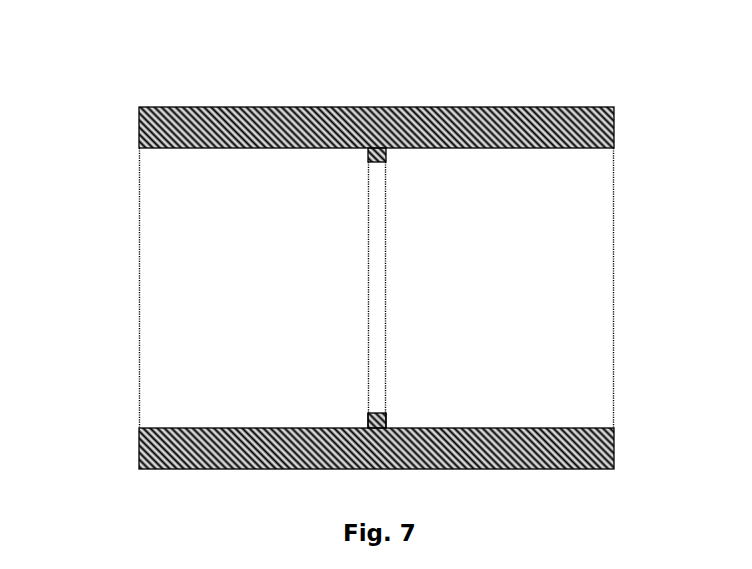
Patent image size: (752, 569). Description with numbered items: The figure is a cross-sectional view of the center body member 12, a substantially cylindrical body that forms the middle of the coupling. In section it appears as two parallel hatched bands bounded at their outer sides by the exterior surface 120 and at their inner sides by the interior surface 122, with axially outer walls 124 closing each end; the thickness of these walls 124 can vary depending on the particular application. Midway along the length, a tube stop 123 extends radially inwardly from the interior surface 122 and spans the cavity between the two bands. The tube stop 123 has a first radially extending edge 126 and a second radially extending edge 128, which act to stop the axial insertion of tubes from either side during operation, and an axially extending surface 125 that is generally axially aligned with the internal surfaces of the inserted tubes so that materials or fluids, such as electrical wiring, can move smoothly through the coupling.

The center body member 12 is at (85, 57).
The exterior surface 120 is at (226, 98).
The interior surface 122 is at (481, 420).
The tube stop 123 is at (407, 181).
The axially outer walls 124 is at (128, 138).
The axially extending surface 125 is at (368, 400).
The first radially extending edge 126 is at (356, 419).
The second radially extending edge 128 is at (397, 418).